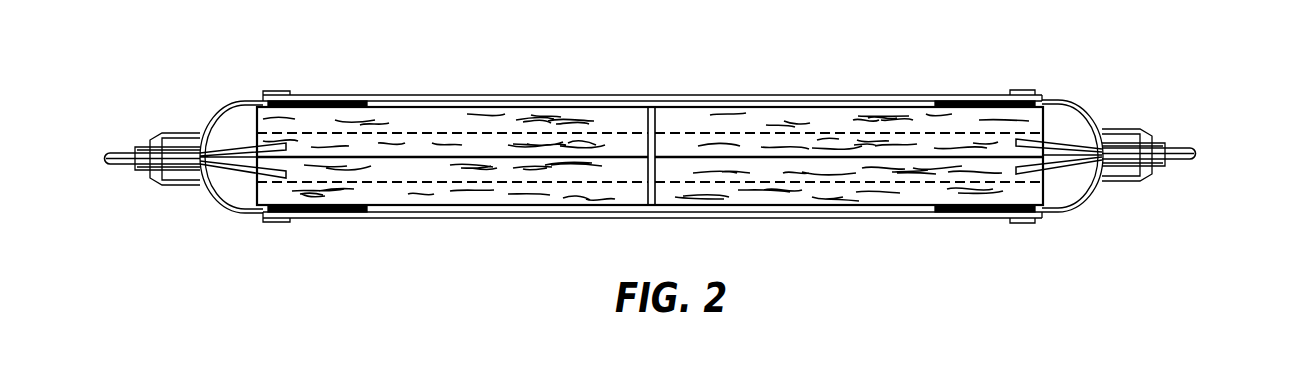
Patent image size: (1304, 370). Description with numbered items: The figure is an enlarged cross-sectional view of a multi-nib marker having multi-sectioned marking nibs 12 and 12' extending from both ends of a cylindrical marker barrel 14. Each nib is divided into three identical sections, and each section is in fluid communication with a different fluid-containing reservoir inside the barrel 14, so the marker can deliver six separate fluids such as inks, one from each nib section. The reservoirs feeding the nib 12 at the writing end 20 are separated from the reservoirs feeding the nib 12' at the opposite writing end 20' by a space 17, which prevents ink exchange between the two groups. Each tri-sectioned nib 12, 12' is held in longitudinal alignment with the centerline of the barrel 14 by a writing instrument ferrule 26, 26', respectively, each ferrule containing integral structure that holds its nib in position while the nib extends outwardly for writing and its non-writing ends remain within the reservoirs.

The multi-sectioned nib 12 is at (153, 120).
The multi-sectioned nib 12' is at (1150, 115).
The marker barrel 14 is at (734, 95).
The space 17 is at (652, 107).
The writing end 20 is at (114, 172).
The opposite writing end 20' is at (1193, 168).
The writing instrument ferrule 26 is at (238, 126).
The writing instrument ferrule 26' is at (1068, 122).